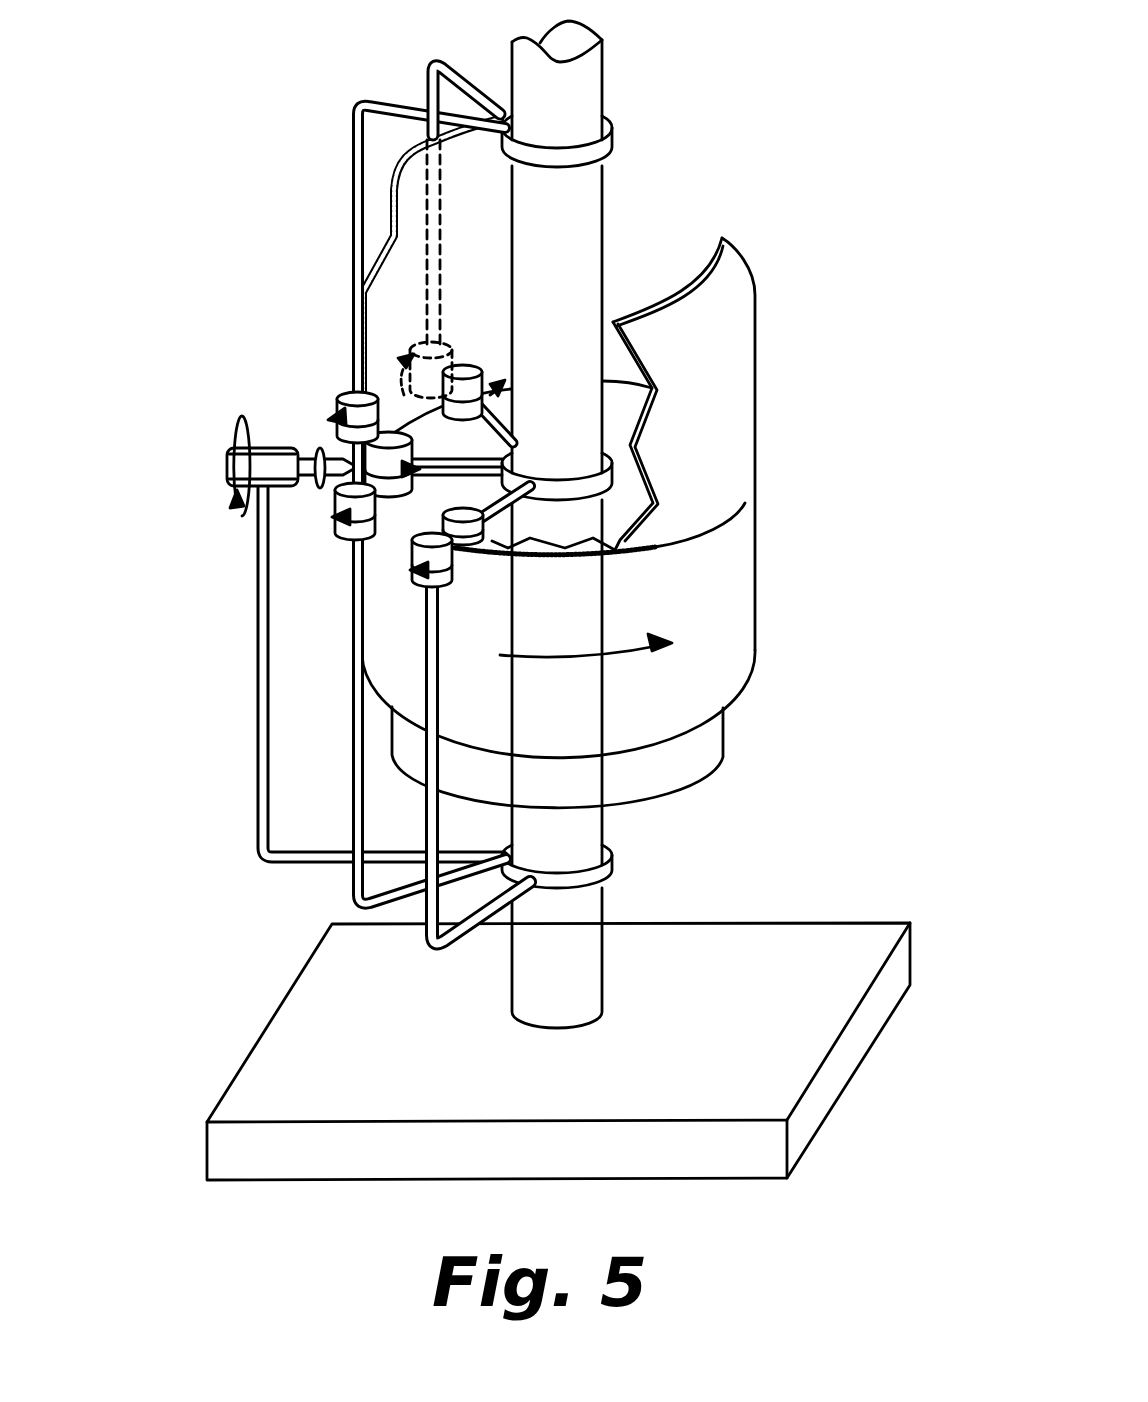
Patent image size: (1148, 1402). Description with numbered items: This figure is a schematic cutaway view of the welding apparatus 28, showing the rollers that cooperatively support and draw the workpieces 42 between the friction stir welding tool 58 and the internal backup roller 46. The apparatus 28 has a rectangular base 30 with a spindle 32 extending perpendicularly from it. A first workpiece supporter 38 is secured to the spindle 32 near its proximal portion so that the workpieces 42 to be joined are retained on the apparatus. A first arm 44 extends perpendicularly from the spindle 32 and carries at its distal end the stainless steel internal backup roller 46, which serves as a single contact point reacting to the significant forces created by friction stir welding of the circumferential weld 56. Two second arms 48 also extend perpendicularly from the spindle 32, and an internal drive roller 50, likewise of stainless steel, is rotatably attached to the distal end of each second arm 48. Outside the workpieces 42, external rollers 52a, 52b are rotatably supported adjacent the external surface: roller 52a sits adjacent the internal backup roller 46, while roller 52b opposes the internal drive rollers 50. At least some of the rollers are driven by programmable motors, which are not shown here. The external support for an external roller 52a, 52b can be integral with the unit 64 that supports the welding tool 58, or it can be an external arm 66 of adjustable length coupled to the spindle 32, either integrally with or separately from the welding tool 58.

The welding apparatus 28 is at (740, 100).
The rectangular base 30 is at (828, 938).
The spindle 32 is at (592, 226).
The first workpiece supporter 38 is at (705, 752).
The workpieces 42 is at (768, 410).
The first arm 44 is at (473, 460).
The internal backup roller 46 is at (402, 486).
The second arms 48 is at (505, 390).
The internal drive roller 50 is at (472, 370).
The external roller 52a is at (335, 410).
The external roller 52b is at (420, 347).
The circumferential weld 56 is at (745, 503).
The friction stir welding tool 58 is at (274, 458).
The unit 64 is at (262, 852).
The external arm 66 is at (432, 773).